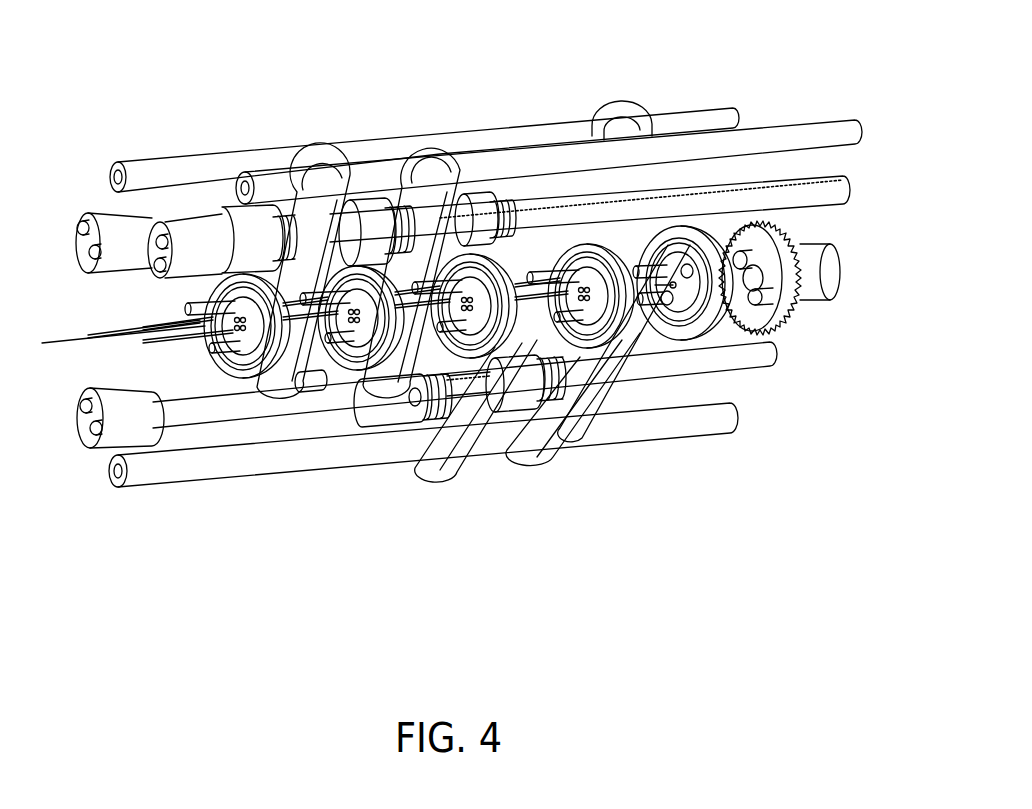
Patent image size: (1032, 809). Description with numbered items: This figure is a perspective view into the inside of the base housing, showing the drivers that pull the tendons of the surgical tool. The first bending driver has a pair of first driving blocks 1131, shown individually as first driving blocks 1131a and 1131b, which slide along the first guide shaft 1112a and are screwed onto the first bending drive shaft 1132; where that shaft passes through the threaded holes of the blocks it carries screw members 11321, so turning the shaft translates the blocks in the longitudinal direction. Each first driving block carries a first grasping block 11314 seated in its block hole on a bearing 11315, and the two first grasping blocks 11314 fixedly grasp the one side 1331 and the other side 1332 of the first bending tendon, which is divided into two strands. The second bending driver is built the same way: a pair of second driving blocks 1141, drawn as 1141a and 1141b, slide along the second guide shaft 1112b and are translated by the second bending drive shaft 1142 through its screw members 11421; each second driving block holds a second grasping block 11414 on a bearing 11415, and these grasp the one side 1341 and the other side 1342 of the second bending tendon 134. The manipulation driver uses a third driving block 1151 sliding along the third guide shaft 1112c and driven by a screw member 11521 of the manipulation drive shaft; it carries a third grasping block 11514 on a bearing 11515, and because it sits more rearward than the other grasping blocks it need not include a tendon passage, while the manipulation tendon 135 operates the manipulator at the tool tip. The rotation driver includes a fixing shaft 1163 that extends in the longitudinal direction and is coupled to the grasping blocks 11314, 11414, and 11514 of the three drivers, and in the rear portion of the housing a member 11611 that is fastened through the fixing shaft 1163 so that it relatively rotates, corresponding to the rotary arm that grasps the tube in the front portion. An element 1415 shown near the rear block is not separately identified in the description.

The first driving block 1131 is at (363, 207).
The first driving block 1131a is at (335, 150).
The first driving block 1131b is at (414, 230).
The screw member 11321 is at (470, 277).
The second grasping block 11414 is at (490, 285).
The bearing 11415 is at (537, 274).
The third driving block 1151 is at (627, 106).
The nozzle tube 1415 is at (645, 280).
The screw member 11521 is at (712, 243).
The third guide shaft 1112c is at (150, 170).
The first bending drive shaft 1132 is at (237, 207).
The first guide shaft 1112a is at (275, 170).
The member 11611 is at (834, 273).
The fixing shaft 1163 is at (757, 302).
The second bending drive shaft 1142 is at (763, 365).
The bearing 11515 is at (710, 320).
The third grasping block 11514 is at (680, 330).
The manipulation tendon 135 is at (52, 344).
The one side of second bending tendon 1341 is at (566, 338).
The screw member 11421 is at (400, 425).
The other side of second bending tendon 1342 is at (467, 363).
The lower bracket arm 1141a is at (423, 472).
The lower bracket arm 1141b is at (517, 460).
The second driving block 1141 is at (515, 477).
The bearing 11315 is at (257, 378).
The first grasping block 11314 is at (227, 373).
The second guide shaft 1112b is at (148, 473).
The other side of first bending tendon 1332 is at (322, 365).
The second bending tendon 134 is at (98, 334).
The one side of first bending tendon 1331 is at (158, 328).